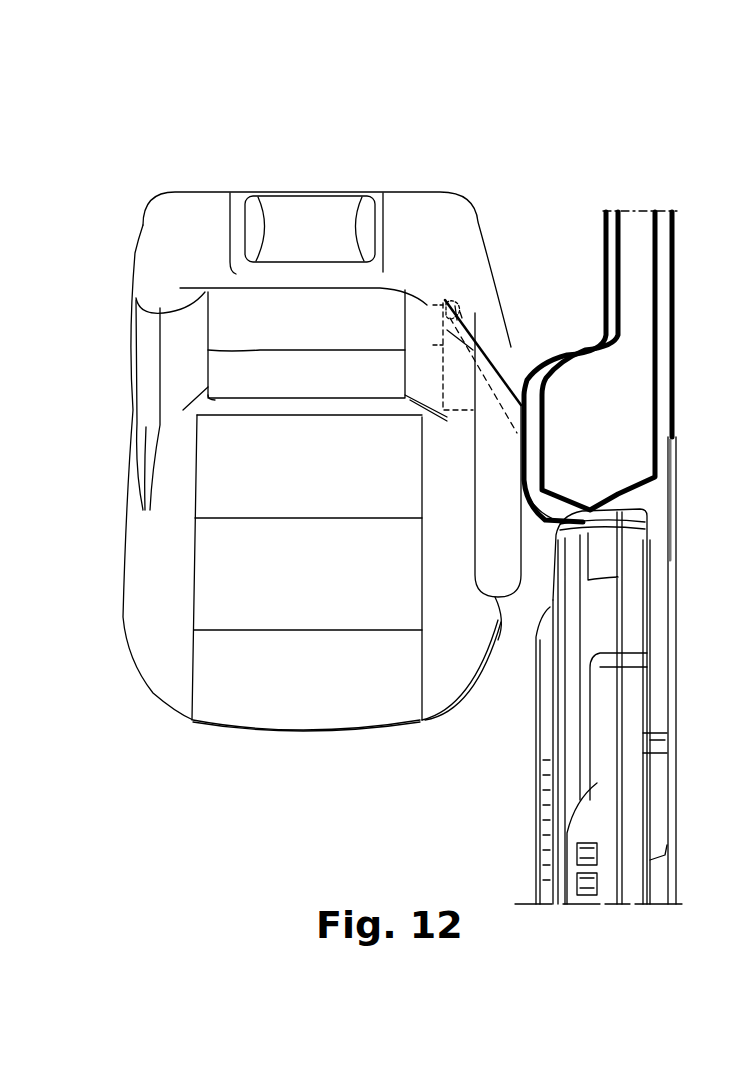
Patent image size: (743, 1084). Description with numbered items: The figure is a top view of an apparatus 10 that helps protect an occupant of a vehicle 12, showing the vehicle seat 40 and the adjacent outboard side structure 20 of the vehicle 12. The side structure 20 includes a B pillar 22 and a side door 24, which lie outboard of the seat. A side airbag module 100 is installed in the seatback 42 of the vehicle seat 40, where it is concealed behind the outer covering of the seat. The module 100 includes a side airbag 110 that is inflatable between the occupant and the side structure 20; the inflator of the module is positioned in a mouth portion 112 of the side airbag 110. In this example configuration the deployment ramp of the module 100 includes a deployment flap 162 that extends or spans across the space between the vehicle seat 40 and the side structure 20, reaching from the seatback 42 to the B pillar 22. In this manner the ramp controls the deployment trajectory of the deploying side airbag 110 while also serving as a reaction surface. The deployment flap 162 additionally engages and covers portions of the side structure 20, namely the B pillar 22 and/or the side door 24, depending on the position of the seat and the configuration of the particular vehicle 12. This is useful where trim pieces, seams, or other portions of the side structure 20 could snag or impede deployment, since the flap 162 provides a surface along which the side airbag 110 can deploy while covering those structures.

The apparatus 10 is at (412, 430).
The vehicle 12 is at (425, 792).
The side structure 20 is at (634, 195).
The B pillar 22 is at (702, 345).
The side door 24 is at (568, 762).
The vehicle seat 40 is at (380, 760).
The seatback 42 is at (217, 248).
The side airbag module 100 is at (458, 452).
The side airbag 110 is at (493, 530).
The mouth portion 112 is at (450, 305).
The deployment flap 162 is at (522, 378).